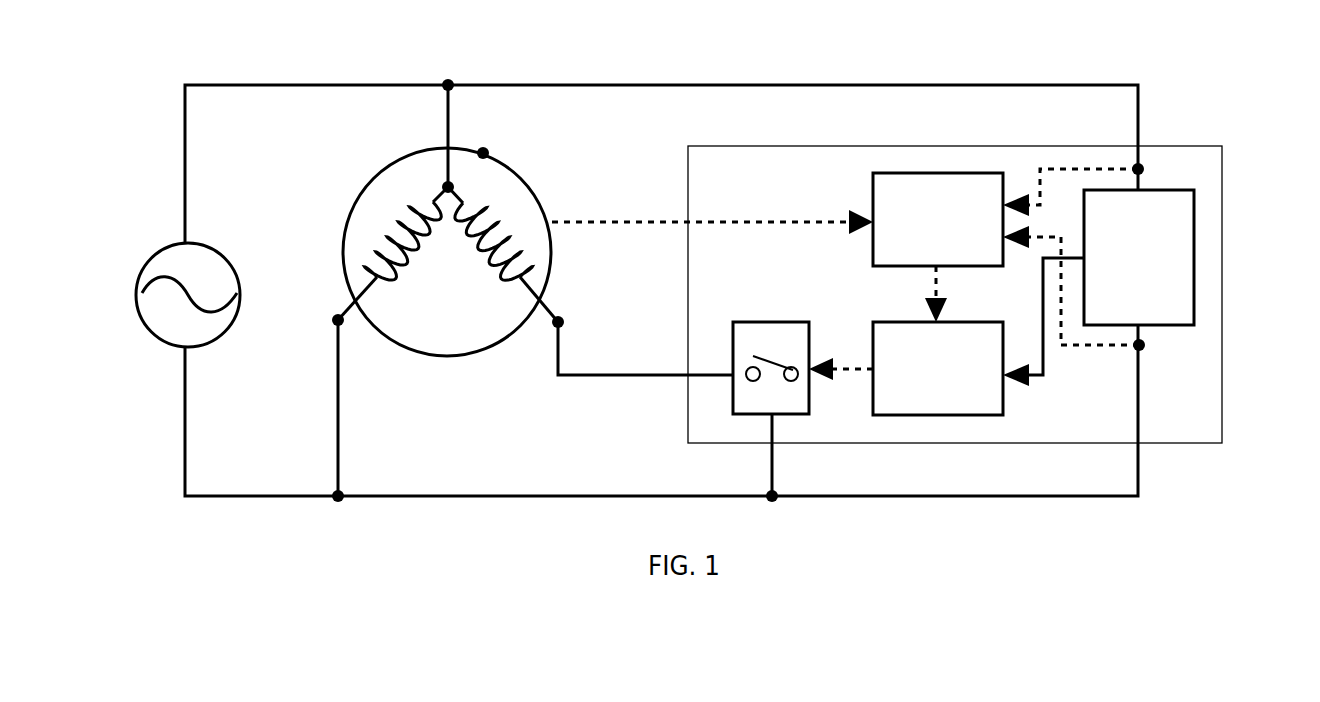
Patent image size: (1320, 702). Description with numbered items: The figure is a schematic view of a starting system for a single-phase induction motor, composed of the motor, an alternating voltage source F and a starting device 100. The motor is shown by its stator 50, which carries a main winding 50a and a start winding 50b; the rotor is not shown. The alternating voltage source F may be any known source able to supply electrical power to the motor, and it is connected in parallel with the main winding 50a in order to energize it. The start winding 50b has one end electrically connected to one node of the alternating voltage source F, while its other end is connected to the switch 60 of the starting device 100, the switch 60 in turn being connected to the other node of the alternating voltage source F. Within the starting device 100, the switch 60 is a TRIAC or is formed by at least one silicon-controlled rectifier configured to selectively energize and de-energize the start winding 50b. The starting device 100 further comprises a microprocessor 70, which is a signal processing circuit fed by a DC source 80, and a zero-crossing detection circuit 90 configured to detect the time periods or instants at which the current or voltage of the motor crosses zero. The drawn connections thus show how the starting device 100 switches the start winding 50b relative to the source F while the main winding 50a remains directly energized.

The alternating voltage source F is at (166, 295).
The stator 50 is at (447, 187).
The main winding 50a is at (374, 214).
The start winding 50b is at (522, 211).
The switch 60 is at (771, 356).
The microprocessor 70 is at (938, 368).
The DC source 80 is at (1139, 257).
The zero-crossing detection circuit 90 is at (938, 219).
The starting device 100 is at (1186, 136).